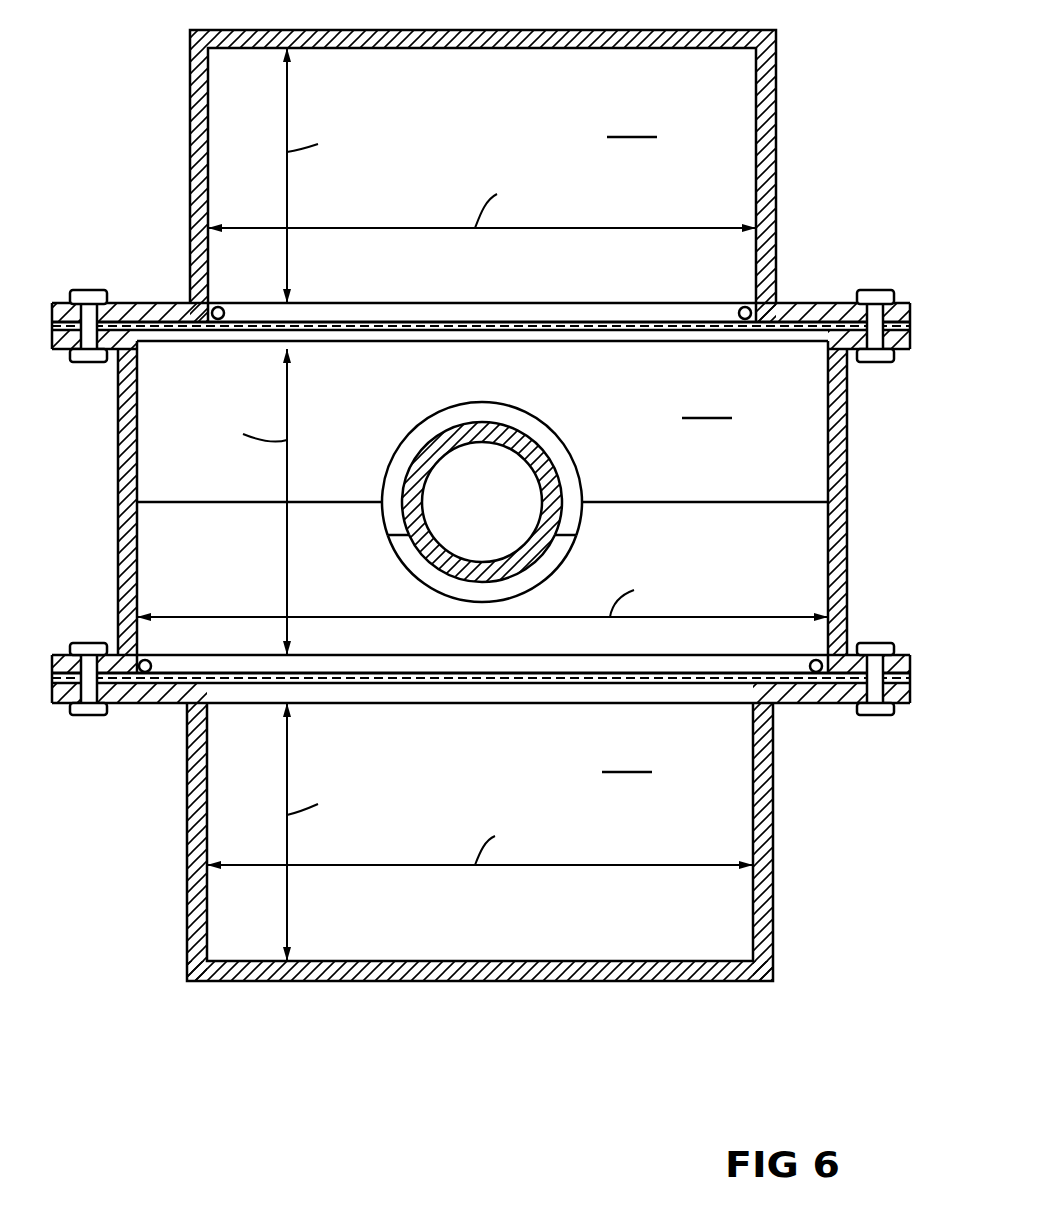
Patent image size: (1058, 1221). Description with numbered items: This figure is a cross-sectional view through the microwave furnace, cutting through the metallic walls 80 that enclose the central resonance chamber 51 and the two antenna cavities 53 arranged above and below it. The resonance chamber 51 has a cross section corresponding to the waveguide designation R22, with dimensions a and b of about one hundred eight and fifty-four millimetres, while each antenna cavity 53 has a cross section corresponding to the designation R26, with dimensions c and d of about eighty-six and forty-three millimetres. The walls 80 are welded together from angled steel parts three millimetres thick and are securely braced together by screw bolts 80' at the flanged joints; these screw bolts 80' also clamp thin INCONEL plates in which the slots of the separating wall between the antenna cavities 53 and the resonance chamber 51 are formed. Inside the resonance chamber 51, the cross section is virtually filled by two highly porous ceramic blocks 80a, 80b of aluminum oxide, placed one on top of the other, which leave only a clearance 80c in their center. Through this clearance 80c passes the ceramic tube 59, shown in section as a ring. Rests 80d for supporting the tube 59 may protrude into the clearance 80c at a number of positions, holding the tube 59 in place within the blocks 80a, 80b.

The walls 80 is at (487, 505).
The screw bolts 80' is at (498, 471).
The porous ceramic block 80a is at (800, 463).
The porous ceramic block 80b is at (800, 540).
The clearance 80c is at (445, 423).
The rests 80d is at (453, 588).
The resonance chamber 51 is at (780, 592).
The antenna cavities 53 is at (733, 100).
The ceramic tube 59 is at (528, 448).